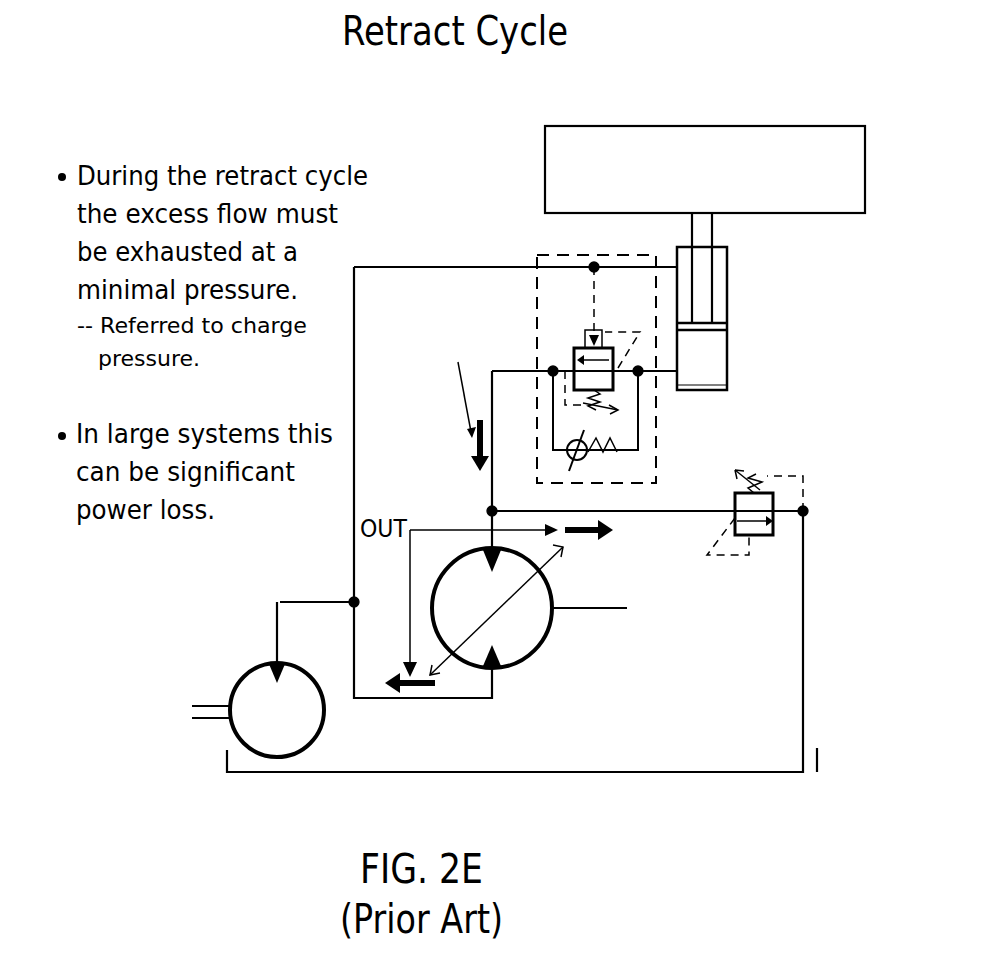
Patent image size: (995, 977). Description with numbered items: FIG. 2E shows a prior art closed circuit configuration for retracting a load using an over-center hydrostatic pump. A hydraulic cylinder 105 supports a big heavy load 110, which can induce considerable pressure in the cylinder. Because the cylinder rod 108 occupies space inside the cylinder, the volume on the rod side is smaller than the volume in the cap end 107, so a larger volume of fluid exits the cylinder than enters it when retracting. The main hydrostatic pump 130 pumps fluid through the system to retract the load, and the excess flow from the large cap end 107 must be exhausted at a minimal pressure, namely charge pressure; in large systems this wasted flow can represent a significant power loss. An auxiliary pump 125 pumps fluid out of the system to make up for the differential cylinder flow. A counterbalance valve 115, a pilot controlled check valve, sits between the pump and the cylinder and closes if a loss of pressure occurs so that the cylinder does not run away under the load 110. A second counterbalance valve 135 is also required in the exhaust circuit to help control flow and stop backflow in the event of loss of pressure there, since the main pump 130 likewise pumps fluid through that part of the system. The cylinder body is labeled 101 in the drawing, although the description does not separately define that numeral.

The hydraulic cylinder 101 is at (722, 280).
The hydraulic cylinder 105 is at (703, 390).
The cap end 107 is at (720, 352).
The cylinder rod 108 is at (712, 225).
The big heavy load 110 is at (802, 213).
The counterbalance valve 115 is at (657, 462).
The auxiliary pump 125 is at (324, 713).
The hydrostatic pump (over center) 130 is at (532, 653).
The second counterbalance valve 135 is at (766, 535).